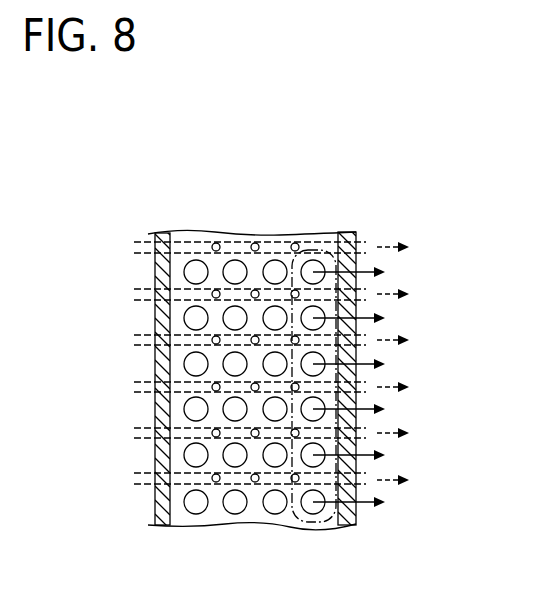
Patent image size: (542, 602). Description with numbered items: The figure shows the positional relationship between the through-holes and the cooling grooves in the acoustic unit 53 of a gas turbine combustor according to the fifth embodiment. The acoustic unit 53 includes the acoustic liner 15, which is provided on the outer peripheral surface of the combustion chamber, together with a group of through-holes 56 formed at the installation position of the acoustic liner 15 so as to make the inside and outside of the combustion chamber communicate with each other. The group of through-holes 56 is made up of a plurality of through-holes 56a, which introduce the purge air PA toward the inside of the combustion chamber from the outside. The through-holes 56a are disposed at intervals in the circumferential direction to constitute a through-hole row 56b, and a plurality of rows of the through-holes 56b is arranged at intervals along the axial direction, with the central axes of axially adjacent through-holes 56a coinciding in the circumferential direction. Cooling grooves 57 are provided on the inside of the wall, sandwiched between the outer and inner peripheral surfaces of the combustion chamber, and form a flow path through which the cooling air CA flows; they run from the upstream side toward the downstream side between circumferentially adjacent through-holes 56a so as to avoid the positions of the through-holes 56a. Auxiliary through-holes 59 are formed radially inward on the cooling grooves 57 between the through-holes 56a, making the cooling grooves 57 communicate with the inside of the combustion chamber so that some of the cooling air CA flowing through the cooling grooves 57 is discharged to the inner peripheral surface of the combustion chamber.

The acoustic unit 53 is at (292, 190).
The acoustic liner 15 is at (154, 503).
The group of through-holes 56 is at (342, 336).
The through-holes 56a is at (313, 260).
The through-hole row 56b is at (350, 250).
The cooling grooves 57 is at (291, 512).
The auxiliary through-holes 59 is at (255, 482).
The purge air PA is at (362, 456).
The cooling air CA is at (383, 479).